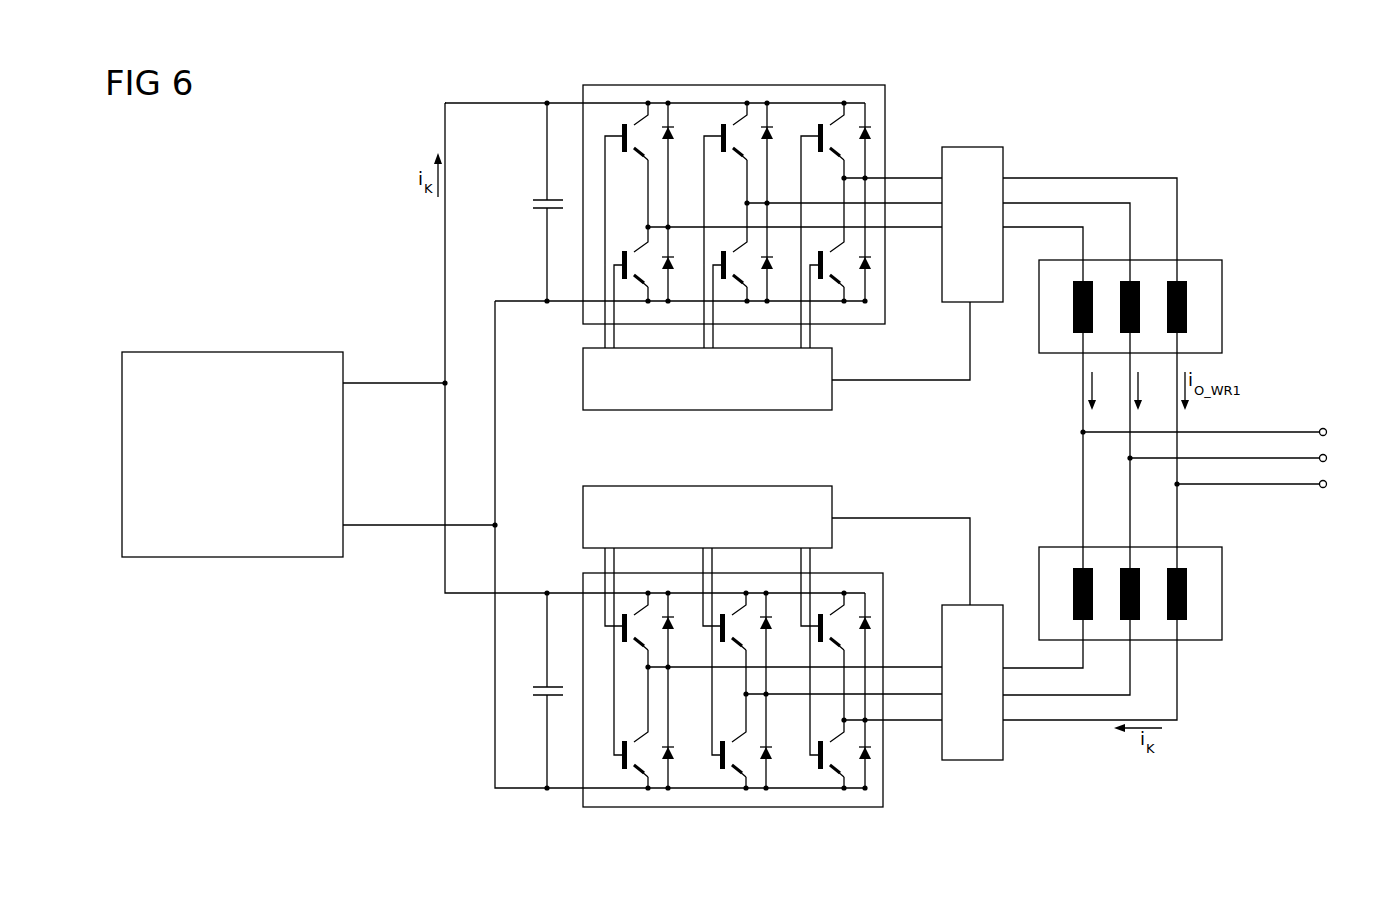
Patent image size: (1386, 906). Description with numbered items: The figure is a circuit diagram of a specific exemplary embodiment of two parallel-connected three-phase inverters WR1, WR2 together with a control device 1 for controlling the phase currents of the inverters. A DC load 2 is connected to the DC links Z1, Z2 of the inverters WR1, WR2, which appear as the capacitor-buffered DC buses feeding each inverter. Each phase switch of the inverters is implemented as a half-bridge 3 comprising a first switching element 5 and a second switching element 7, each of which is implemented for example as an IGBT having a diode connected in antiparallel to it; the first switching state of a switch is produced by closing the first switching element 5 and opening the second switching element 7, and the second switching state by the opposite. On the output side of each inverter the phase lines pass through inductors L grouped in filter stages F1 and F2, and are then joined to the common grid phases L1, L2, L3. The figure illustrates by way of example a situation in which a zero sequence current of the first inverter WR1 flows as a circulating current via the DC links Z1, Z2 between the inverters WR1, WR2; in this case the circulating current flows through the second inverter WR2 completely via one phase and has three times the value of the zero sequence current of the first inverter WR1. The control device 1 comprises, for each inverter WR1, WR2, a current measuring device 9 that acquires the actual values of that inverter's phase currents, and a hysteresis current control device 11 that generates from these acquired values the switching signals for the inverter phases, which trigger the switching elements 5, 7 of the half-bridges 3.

The control device 1 is at (938, 430).
The DC load 2 is at (229, 351).
The half-bridge 3 is at (697, 387).
The first switching element 5 is at (626, 121).
The second switching element 7 is at (628, 293).
The current measuring device 9 is at (975, 147).
The hysteresis current control device 11 is at (738, 412).
The DC link Z1 is at (566, 99).
The DC link Z2 is at (565, 799).
The first inverter WR1 is at (806, 84).
The second inverter WR2 is at (801, 808).
The inductor L is at (1187, 299).
The filter 1 F1 is at (1172, 440).
The filter 2 F2 is at (1222, 619).
The grid phase L1 is at (1219, 432).
The grid phase L2 is at (1243, 458).
The grid phase L3 is at (1266, 484).